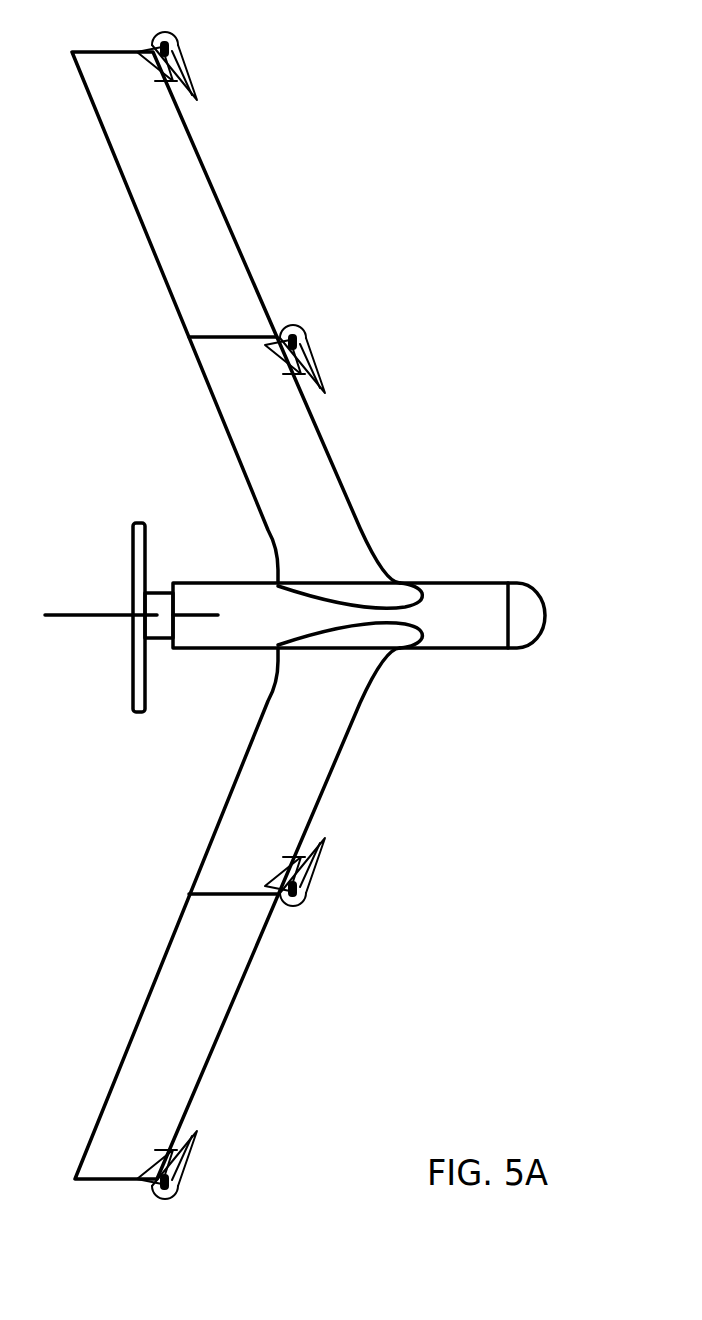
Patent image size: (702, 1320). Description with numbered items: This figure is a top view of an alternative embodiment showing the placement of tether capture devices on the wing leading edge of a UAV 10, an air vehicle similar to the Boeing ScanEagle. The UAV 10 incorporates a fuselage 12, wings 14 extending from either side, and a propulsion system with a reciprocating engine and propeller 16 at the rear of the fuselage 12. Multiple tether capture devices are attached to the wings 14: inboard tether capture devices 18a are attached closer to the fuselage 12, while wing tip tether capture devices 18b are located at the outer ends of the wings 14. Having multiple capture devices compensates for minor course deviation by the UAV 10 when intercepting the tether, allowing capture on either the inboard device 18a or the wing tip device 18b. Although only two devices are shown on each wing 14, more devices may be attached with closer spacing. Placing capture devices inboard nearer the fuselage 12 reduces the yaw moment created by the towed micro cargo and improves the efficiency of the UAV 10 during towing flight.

The UAV 10 is at (515, 540).
The fuselage 12 is at (462, 649).
The wings 14 is at (198, 207).
The propeller 16 is at (133, 548).
The inboard tether capture devices 18a is at (303, 343).
The wing tip tether capture devices 18b is at (160, 36).